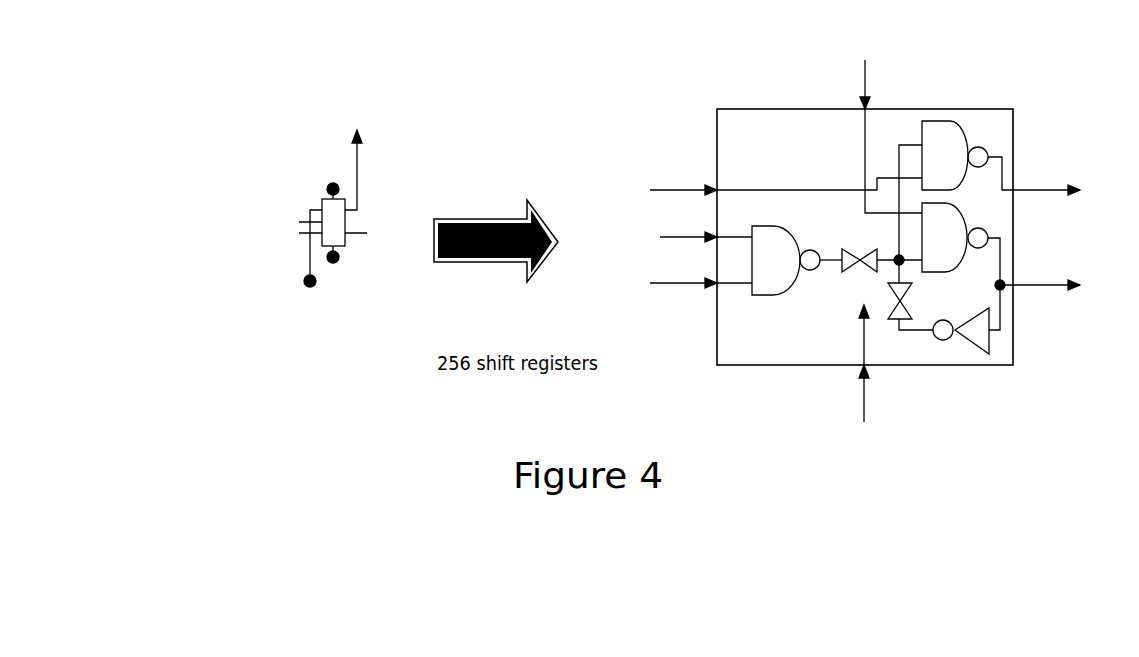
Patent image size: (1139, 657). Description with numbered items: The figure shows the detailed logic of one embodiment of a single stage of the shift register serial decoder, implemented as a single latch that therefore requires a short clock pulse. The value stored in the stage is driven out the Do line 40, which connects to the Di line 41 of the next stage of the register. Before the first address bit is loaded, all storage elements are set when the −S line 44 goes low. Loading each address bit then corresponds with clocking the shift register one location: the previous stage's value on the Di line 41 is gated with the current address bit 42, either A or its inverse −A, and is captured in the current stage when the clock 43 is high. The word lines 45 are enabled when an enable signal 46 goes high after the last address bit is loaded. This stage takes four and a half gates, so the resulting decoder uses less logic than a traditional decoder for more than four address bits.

The Do line 40 is at (1047, 286).
The Di line 41 is at (670, 283).
The address bit 42 is at (659, 235).
The clock 43 is at (864, 389).
The −S line 44 is at (865, 87).
The word lines 45 is at (1035, 190).
The enable signal 46 is at (685, 190).